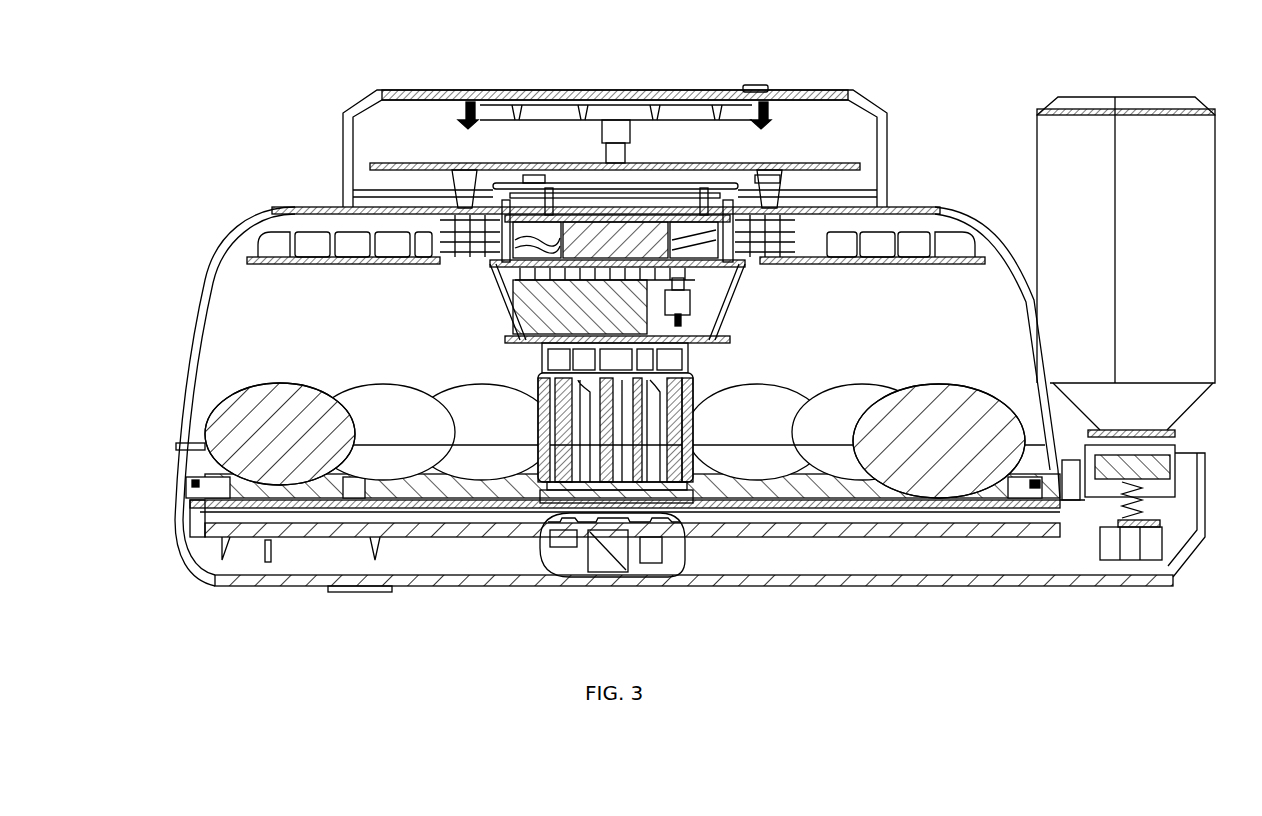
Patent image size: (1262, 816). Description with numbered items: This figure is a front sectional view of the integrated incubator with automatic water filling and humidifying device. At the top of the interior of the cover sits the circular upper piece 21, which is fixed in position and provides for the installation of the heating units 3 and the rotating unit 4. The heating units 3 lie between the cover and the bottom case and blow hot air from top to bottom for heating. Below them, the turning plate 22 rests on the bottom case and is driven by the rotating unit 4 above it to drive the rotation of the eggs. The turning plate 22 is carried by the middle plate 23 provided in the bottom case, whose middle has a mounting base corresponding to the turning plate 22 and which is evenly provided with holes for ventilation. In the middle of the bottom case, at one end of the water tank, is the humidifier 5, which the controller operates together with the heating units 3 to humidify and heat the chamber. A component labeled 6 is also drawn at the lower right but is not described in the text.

The heating units 3 is at (437, 212).
The upper piece 21 is at (338, 255).
The rotating unit 4 is at (540, 318).
The turning plate 22 is at (375, 482).
The middle plate 23 is at (238, 530).
The humidifier 5 is at (613, 568).
The switch assembly 6 is at (1150, 515).